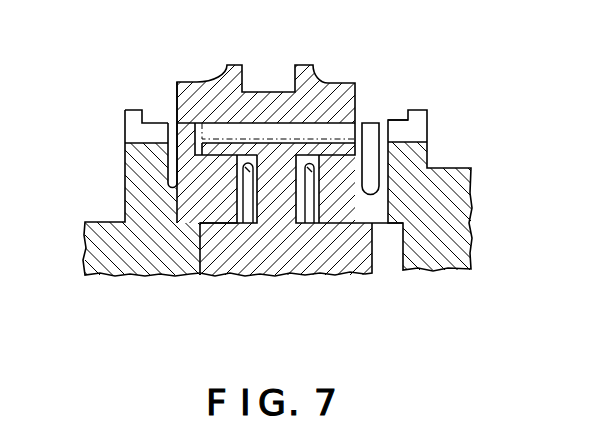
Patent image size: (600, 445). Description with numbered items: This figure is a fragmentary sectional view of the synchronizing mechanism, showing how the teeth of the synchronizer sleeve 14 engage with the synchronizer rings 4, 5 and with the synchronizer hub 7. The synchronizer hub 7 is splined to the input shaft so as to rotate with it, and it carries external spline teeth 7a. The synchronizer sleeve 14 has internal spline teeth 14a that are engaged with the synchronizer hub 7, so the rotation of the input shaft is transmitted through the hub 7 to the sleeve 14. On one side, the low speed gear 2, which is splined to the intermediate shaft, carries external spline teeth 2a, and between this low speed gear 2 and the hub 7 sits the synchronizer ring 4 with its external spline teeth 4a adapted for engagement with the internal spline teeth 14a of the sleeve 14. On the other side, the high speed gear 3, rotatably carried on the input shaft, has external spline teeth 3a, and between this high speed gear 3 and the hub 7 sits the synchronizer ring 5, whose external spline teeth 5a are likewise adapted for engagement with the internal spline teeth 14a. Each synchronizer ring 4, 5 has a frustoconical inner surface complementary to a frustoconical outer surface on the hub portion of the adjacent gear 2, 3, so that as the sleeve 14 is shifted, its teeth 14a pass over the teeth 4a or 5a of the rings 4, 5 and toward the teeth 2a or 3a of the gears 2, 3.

The low speed gear 2 is at (424, 147).
The external spline teeth 2a is at (404, 128).
The high speed gear 3 is at (133, 167).
The external spline teeth 3a is at (126, 116).
The synchronizer ring 4 is at (320, 197).
The external spline teeth 4a is at (402, 127).
The synchronizer ring 5 is at (180, 175).
The external spline teeth 5a is at (187, 128).
The synchronizer hub 7 is at (347, 272).
The external spline teeth 7a is at (227, 193).
The synchronizer sleeve 14 is at (228, 70).
The internal spline teeth 14a is at (368, 131).